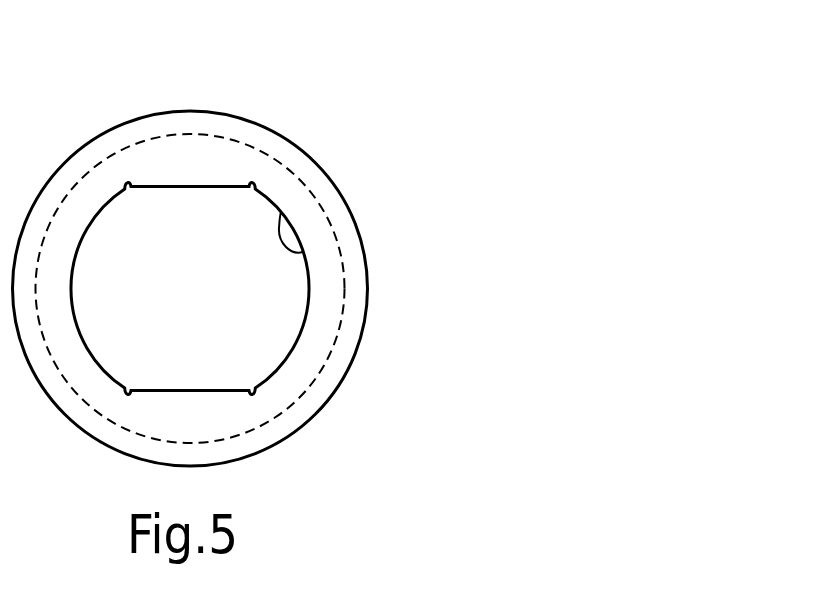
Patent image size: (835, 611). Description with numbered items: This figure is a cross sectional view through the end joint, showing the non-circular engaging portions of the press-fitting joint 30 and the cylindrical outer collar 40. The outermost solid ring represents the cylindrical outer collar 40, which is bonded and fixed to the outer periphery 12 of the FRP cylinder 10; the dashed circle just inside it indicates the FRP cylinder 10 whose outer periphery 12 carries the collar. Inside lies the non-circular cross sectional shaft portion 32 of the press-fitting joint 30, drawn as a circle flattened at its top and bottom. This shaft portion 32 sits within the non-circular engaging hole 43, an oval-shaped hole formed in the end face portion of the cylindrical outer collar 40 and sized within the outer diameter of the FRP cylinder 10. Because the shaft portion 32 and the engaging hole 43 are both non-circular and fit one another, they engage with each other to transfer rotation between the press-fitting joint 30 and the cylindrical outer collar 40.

The FRP cylinder 10 is at (270, 288).
The outer periphery 12 is at (305, 390).
The press-fitting joint 30 is at (235, 232).
The non-circular cross sectional shaft portion 32 is at (232, 187).
The cylindrical outer collar 40 is at (386, 231).
The non-circular engaging hole 43 is at (303, 252).